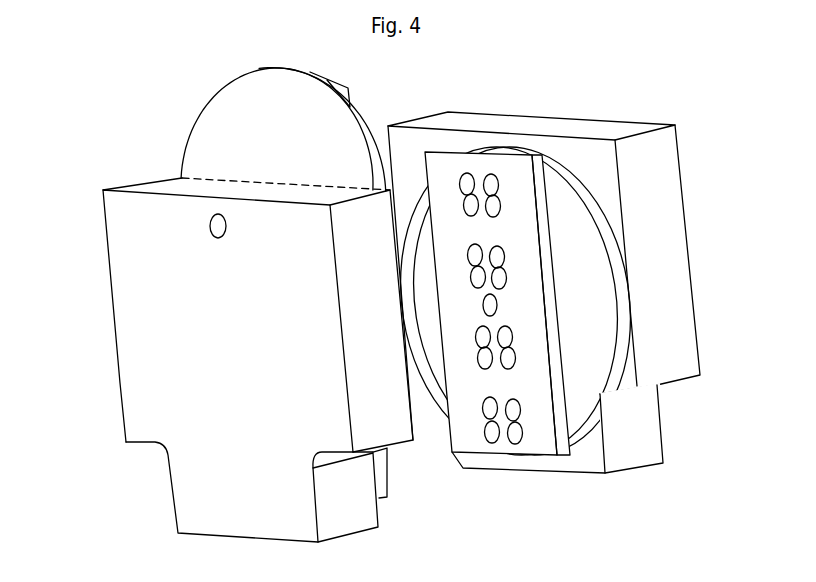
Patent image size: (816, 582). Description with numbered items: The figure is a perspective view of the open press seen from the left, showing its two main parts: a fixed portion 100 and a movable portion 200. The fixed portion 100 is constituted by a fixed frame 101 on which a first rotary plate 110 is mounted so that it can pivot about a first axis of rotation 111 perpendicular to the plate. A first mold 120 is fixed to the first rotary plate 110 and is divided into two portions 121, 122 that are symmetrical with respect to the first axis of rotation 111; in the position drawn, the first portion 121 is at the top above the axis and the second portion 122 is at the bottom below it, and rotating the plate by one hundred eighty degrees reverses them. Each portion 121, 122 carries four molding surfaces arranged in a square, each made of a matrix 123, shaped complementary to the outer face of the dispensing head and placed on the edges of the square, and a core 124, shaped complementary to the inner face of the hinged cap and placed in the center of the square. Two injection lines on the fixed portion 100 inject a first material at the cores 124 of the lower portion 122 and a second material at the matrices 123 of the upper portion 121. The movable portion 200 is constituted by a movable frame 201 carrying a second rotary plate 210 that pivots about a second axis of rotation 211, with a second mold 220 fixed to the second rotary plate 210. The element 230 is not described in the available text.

The fixed portion 100 is at (591, 299).
The fixed frame 101 is at (628, 422).
The first rotary plate 110 is at (515, 347).
The first axis of rotation 111 is at (635, 295).
The first mold 120 is at (574, 254).
The first portion of the first mold 121 is at (607, 299).
The second portion of the first mold 122 is at (603, 368).
The matrix 123 is at (625, 231).
The core 124 is at (623, 331).
The movable portion 200 is at (209, 296).
The movable frame 201 is at (179, 321).
The second rotary plate 210 is at (282, 101).
The second axis of rotation 211 is at (116, 229).
The second mold 220 is at (319, 59).
The foot 230 is at (230, 515).